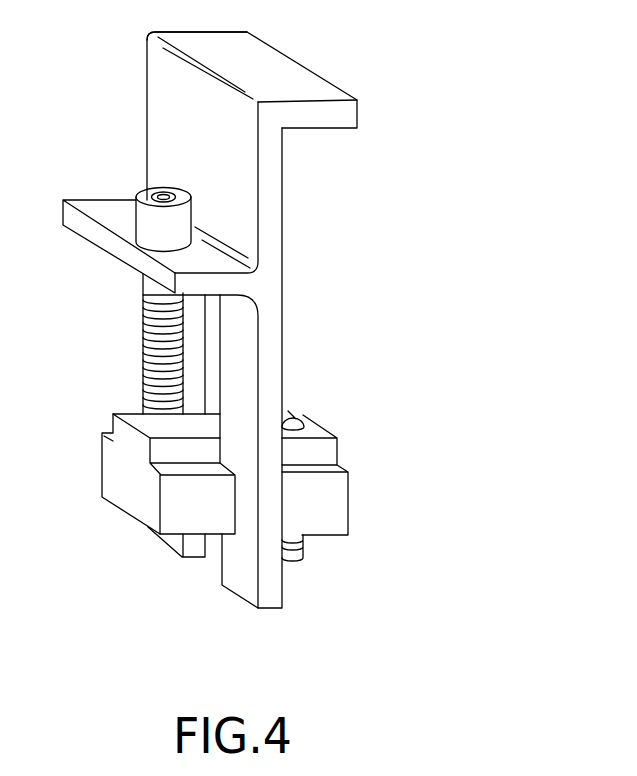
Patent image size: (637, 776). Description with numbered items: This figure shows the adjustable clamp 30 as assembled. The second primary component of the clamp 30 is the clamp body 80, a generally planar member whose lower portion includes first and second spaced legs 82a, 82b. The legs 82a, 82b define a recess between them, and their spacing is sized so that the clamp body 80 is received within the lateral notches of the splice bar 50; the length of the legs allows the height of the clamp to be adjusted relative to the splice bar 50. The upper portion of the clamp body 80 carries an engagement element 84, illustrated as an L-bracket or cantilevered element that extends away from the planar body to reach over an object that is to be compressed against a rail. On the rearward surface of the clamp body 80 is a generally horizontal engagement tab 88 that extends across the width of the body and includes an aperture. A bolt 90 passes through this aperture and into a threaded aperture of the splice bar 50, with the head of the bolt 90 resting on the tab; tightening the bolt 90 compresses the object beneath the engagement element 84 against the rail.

The clamp 30 is at (402, 425).
The splice bar 50 is at (337, 502).
The clamp body 80 is at (265, 350).
The first leg 82a is at (232, 589).
The second leg 82b is at (168, 543).
The engagement element 84 is at (347, 117).
The engagement tab 88 is at (98, 208).
The bolt 90 is at (143, 347).